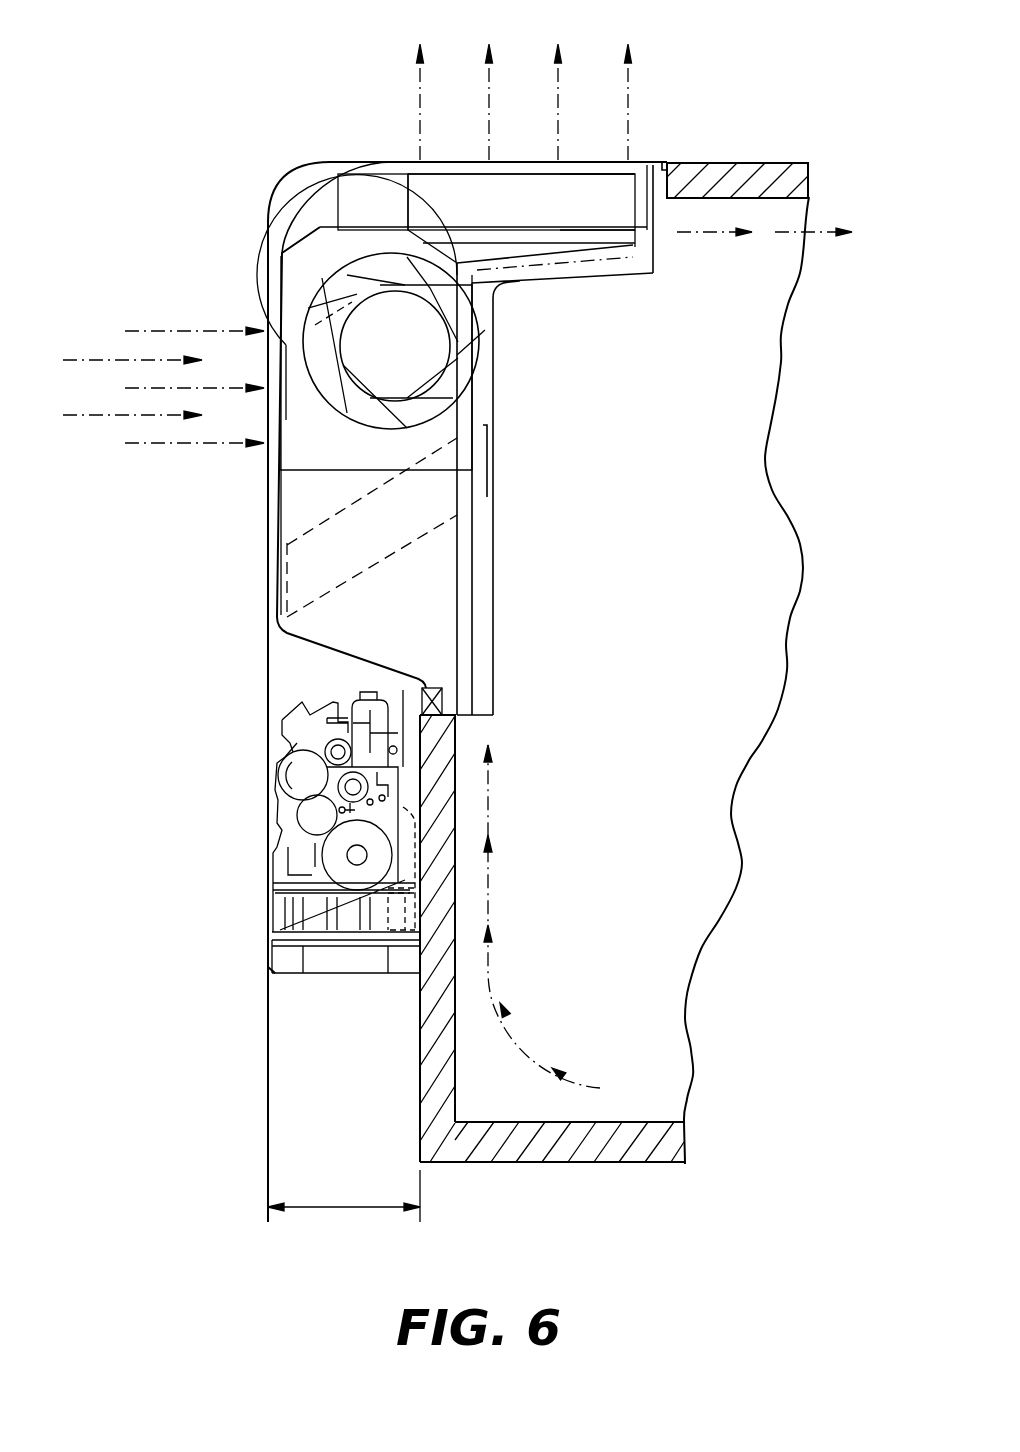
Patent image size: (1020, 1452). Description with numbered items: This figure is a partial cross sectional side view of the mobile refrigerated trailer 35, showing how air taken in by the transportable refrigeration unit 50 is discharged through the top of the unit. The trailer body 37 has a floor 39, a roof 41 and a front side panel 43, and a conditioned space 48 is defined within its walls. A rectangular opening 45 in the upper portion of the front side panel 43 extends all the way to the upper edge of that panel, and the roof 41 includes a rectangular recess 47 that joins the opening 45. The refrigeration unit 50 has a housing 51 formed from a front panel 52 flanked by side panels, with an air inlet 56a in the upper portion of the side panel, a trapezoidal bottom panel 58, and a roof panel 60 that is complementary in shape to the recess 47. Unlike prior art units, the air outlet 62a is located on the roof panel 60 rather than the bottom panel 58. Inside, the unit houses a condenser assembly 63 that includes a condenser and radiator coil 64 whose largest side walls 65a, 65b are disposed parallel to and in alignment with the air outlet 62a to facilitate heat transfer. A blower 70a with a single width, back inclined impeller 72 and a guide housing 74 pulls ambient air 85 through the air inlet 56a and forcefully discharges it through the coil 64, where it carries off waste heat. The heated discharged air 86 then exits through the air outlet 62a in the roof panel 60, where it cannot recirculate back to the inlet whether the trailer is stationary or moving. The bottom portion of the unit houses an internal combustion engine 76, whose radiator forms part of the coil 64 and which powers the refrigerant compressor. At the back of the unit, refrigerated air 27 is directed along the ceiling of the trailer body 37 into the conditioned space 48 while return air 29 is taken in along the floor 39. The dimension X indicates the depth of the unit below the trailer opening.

The refrigerated air 27 is at (788, 230).
The return air 29 is at (626, 1088).
The mobile refrigerated trailer 35 is at (272, 168).
The trailer body 37 is at (712, 150).
The floor 39 is at (600, 1143).
The roof 41 is at (782, 165).
The front side panel 43 is at (435, 1078).
The rectangular opening 45 is at (444, 703).
The rectangular recess 47 is at (658, 182).
The conditioned space 48 is at (687, 741).
The transportable refrigeration unit 50 is at (250, 296).
The housing 51 is at (253, 590).
The front panel 52 is at (268, 510).
The air inlet 56a is at (273, 451).
The bottom panel 58 is at (330, 975).
The roof panel 60 is at (462, 155).
The air outlet 62a is at (515, 162).
The condenser assembly 63 is at (370, 212).
The condenser and radiator coil 64 is at (532, 200).
The side wall of coil 65a is at (600, 168).
The side wall of coil 65b is at (582, 232).
The blower 70a is at (305, 275).
The single width, back inclined impeller 72 is at (327, 378).
The guide housing 74 is at (533, 290).
The internal combustion engine 76 is at (298, 782).
The ambient air 85 is at (89, 358).
The heated discharged air 86 is at (486, 60).
The dimension X is at (345, 1210).